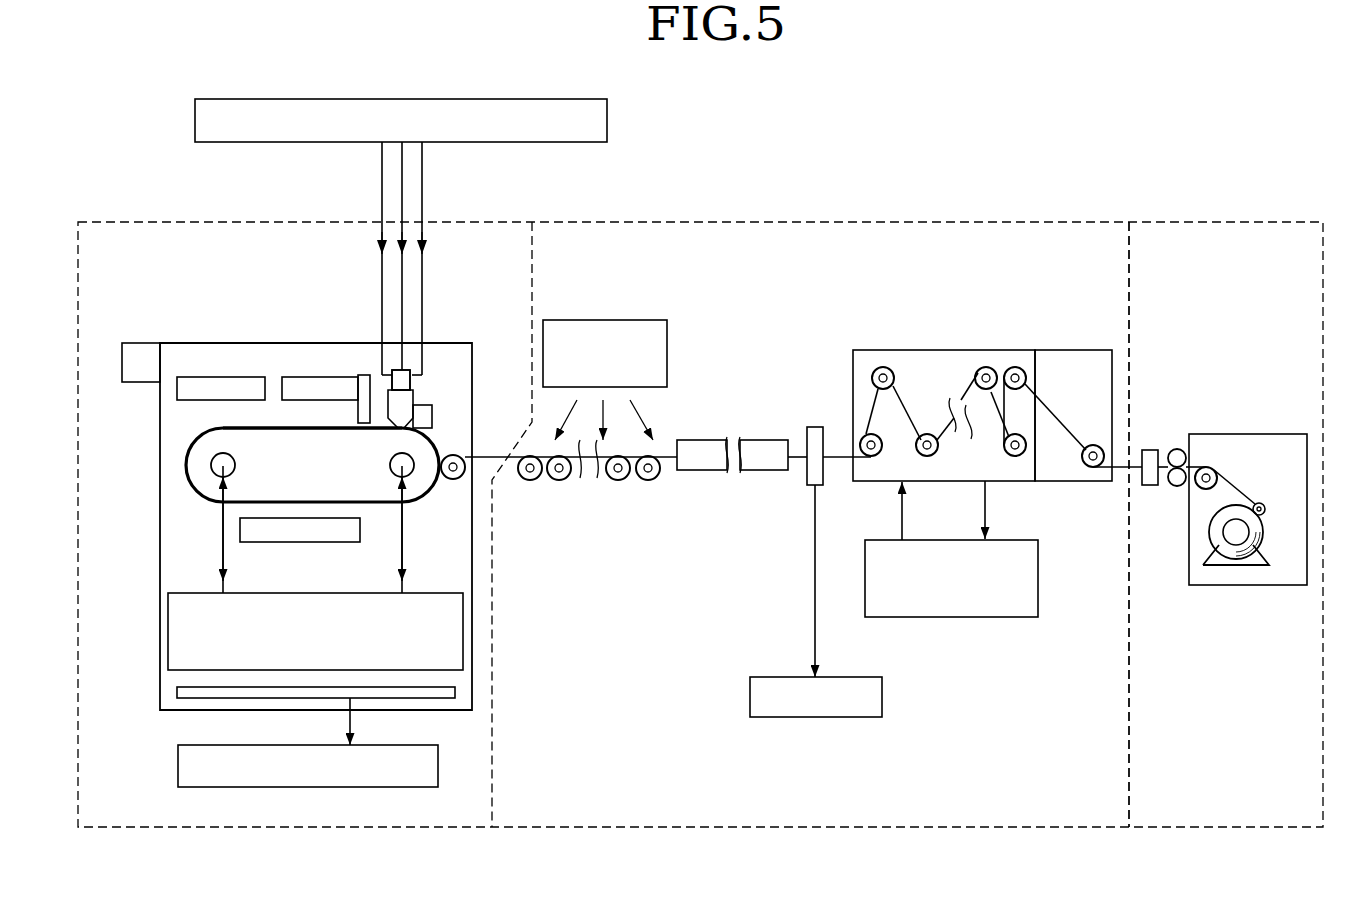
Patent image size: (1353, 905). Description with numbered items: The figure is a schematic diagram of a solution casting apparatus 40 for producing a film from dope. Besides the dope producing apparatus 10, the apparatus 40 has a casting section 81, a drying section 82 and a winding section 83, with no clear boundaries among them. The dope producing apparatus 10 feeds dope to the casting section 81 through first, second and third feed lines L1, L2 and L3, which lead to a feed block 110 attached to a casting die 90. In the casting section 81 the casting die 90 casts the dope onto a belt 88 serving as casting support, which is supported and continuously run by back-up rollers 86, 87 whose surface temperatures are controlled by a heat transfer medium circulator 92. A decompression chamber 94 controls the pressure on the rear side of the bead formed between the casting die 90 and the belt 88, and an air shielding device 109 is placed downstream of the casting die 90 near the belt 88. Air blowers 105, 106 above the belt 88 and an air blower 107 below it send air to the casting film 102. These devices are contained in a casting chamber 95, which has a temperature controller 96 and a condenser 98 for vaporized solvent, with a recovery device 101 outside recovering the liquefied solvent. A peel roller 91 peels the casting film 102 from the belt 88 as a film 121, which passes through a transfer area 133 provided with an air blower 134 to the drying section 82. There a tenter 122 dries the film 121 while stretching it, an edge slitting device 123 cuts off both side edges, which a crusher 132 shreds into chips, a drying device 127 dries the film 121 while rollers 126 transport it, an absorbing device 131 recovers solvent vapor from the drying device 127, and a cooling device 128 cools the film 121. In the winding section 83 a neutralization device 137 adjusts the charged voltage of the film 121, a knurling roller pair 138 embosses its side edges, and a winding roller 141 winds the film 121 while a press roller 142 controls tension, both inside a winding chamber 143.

The dope producing apparatus 10 is at (608, 118).
The solution casting apparatus 40 is at (1110, 178).
The casting section 81 is at (273, 827).
The drying section 82 is at (912, 827).
The winding section 83 is at (1212, 827).
The first feed line L1 is at (423, 193).
The second feed line L2 is at (381, 185).
The third feed line L3 is at (403, 183).
The back-up roller 86 is at (417, 487).
The back-up roller 87 is at (206, 486).
The belt 88 is at (440, 442).
The casting die 90 is at (414, 395).
The peel roller 91 is at (456, 481).
The heat transfer medium circulator 92 is at (168, 625).
The decompression chamber 94 is at (433, 416).
The casting chamber 95 is at (159, 688).
The temperature controller 96 is at (140, 383).
The condenser 98 is at (455, 689).
The recovery device 101 is at (338, 787).
The casting film 102 is at (313, 428).
The air blower 105 is at (300, 376).
The air blower 106 is at (199, 376).
The air blower 107 is at (305, 542).
The air shielding device 109 is at (362, 375).
The feed block 110 is at (411, 382).
The film 121 is at (798, 450).
The tenter 122 is at (697, 470).
The edge slitting device 123 is at (802, 476).
The rollers 126 is at (977, 373).
The drying device 127 is at (988, 349).
The cooling device 128 is at (1062, 349).
The absorbing device 131 is at (985, 617).
The crusher 132 is at (825, 717).
The transfer area 133 is at (522, 483).
The air blower 134 is at (603, 318).
The neutralization device 137 is at (1152, 448).
The knurling roller pair 138 is at (1178, 448).
The winding roller 141 is at (1232, 532).
The press roller 142 is at (1259, 503).
The winding chamber 143 is at (1245, 433).